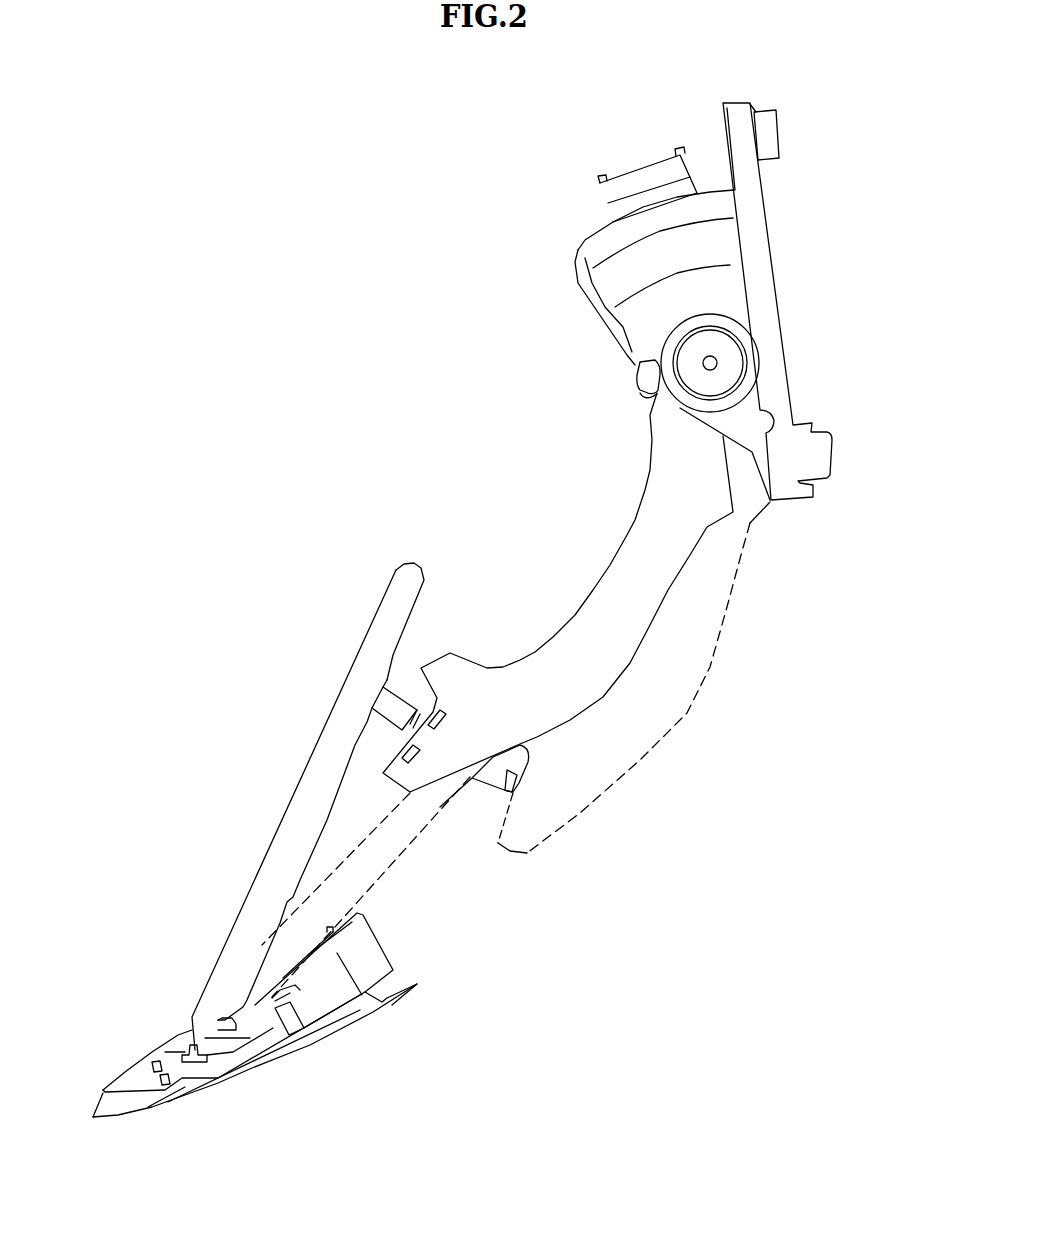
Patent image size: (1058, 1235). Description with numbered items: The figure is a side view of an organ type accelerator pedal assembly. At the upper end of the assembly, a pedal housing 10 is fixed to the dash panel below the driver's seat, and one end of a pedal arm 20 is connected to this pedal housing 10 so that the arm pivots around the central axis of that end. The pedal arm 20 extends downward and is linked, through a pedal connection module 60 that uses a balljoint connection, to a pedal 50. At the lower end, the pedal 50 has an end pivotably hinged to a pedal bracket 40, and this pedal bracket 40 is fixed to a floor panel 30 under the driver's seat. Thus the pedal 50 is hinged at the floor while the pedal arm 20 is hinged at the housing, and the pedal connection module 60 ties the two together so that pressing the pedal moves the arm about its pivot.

The pedal housing 10 is at (780, 286).
The pedal arm 20 is at (612, 537).
The floor panel 30 is at (203, 1097).
The pedal bracket 40 is at (140, 1053).
The pedal 50 is at (289, 792).
The pedal connection module 60 is at (400, 693).